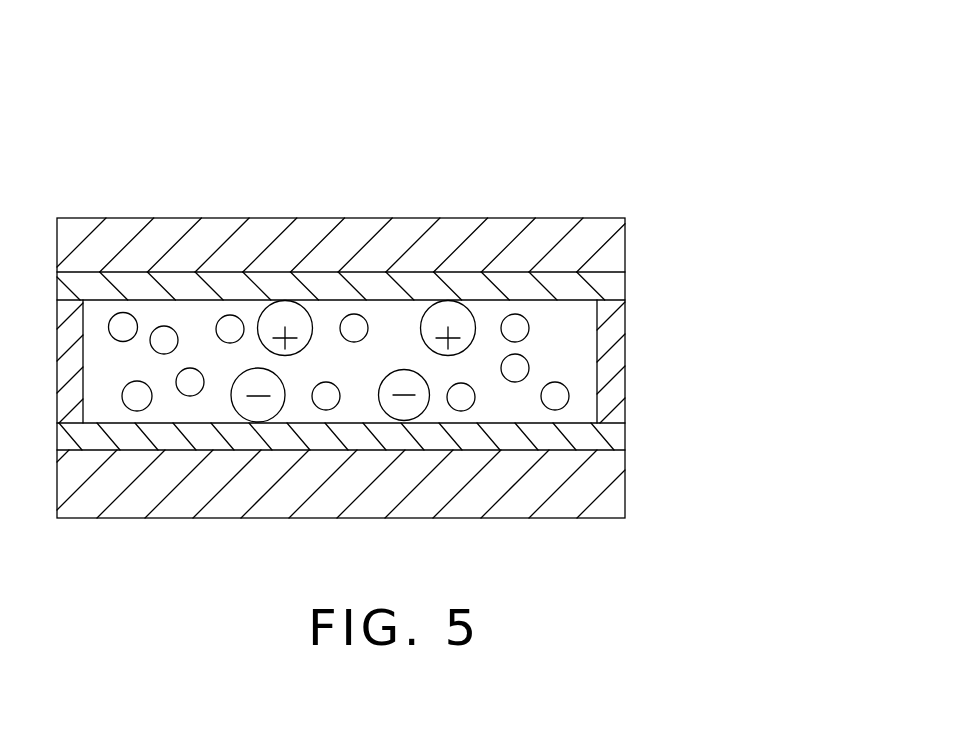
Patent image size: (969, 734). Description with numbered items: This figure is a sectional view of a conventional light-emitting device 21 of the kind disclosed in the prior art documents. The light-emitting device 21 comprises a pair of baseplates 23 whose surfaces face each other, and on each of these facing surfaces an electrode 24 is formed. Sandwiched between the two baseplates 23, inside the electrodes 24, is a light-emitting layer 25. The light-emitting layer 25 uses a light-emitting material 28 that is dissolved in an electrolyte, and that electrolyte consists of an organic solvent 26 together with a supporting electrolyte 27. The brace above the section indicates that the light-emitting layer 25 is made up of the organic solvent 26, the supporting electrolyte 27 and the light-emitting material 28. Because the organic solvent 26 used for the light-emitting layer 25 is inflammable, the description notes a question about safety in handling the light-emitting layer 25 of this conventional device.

The light-emitting device 21 is at (677, 177).
The baseplate 23 is at (617, 248).
The electrode 24 is at (617, 288).
The light-emitting layer 25 is at (133, 157).
The organic solvent 26 is at (483, 312).
The supporting electrolyte 27 is at (400, 380).
The light-emitting material 28 is at (164, 340).